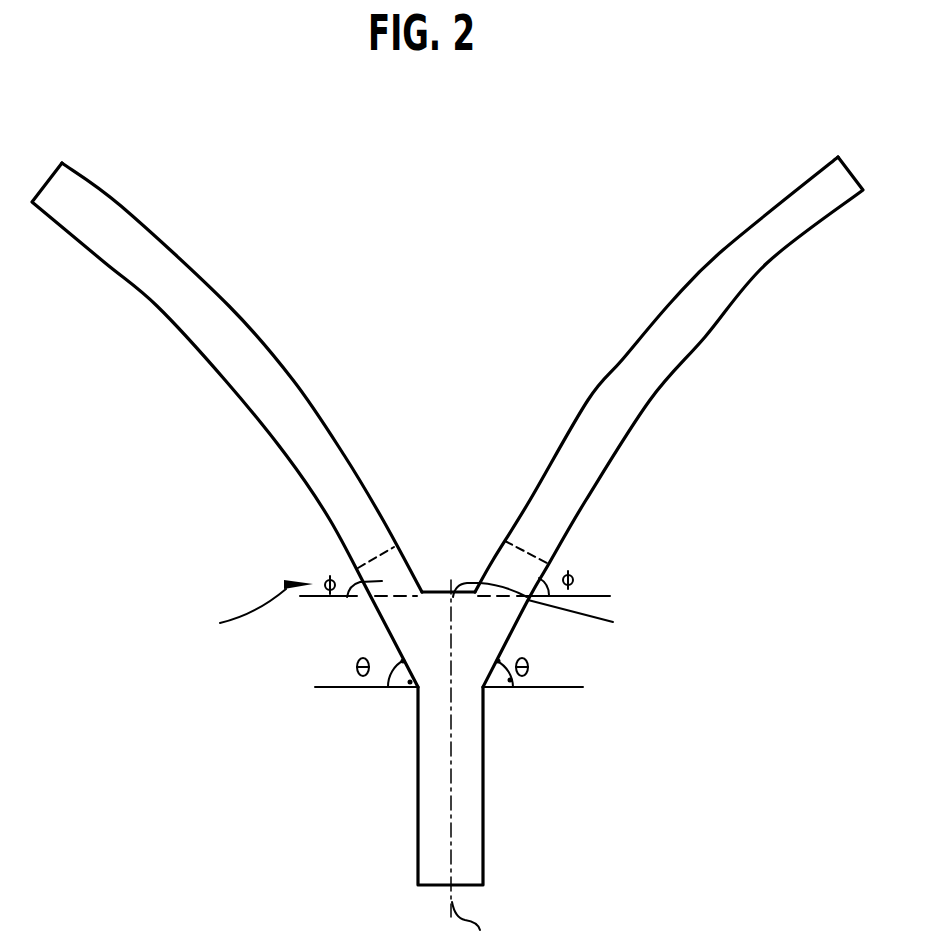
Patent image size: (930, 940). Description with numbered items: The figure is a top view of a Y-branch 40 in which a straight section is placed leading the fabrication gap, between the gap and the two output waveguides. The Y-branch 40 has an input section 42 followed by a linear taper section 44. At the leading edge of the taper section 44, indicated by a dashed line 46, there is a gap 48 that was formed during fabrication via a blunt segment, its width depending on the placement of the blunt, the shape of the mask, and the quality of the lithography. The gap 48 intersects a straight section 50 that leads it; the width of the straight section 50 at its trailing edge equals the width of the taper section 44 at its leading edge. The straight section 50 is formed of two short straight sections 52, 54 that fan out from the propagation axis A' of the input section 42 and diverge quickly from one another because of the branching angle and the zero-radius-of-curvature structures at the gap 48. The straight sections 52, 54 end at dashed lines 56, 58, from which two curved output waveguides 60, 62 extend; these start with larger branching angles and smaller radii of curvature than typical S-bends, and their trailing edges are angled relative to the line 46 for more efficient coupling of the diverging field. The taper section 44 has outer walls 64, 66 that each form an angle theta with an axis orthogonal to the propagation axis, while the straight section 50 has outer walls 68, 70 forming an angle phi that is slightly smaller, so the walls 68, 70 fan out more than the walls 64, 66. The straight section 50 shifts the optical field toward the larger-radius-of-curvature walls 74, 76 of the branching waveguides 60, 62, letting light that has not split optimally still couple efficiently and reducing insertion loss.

The Y-branch 40 is at (452, 173).
The input section 42 is at (475, 823).
The linear taper section 44 is at (515, 625).
The dashed line 46 is at (388, 602).
The gap 48 is at (591, 620).
The straight section 50 is at (242, 609).
The short straight section 52 is at (367, 598).
The short straight section 54 is at (505, 573).
The dashed line 56 is at (377, 552).
The dashed line 58 is at (528, 547).
The curved output waveguide 60 is at (156, 303).
The curved output waveguide 62 is at (716, 322).
The outer wall 64 is at (386, 627).
The outer wall 66 is at (513, 640).
The outer wall 68 is at (352, 574).
The outer wall 70 is at (547, 568).
The larger-radius-of-curvature wall 74 is at (265, 342).
The larger-radius-of-curvature wall 76 is at (616, 364).